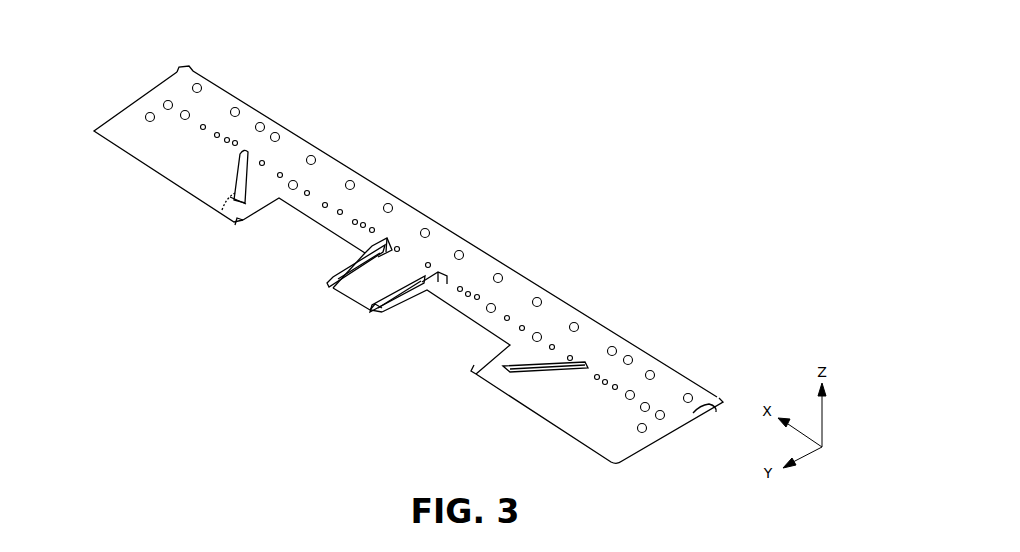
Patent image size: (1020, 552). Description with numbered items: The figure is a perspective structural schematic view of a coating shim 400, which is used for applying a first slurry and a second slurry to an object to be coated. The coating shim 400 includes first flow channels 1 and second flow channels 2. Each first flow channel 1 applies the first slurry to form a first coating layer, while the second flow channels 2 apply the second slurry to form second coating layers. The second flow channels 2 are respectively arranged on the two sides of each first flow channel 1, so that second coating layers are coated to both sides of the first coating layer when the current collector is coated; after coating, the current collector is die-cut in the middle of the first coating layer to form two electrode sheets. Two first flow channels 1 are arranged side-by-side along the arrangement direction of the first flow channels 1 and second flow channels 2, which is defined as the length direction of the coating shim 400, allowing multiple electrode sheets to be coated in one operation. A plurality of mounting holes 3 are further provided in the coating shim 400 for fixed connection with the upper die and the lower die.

The coating shim 400 is at (408, 246).
The first flow channel 1 is at (290, 243).
The second flow channel 2 is at (233, 203).
The mounting holes 3 is at (319, 154).